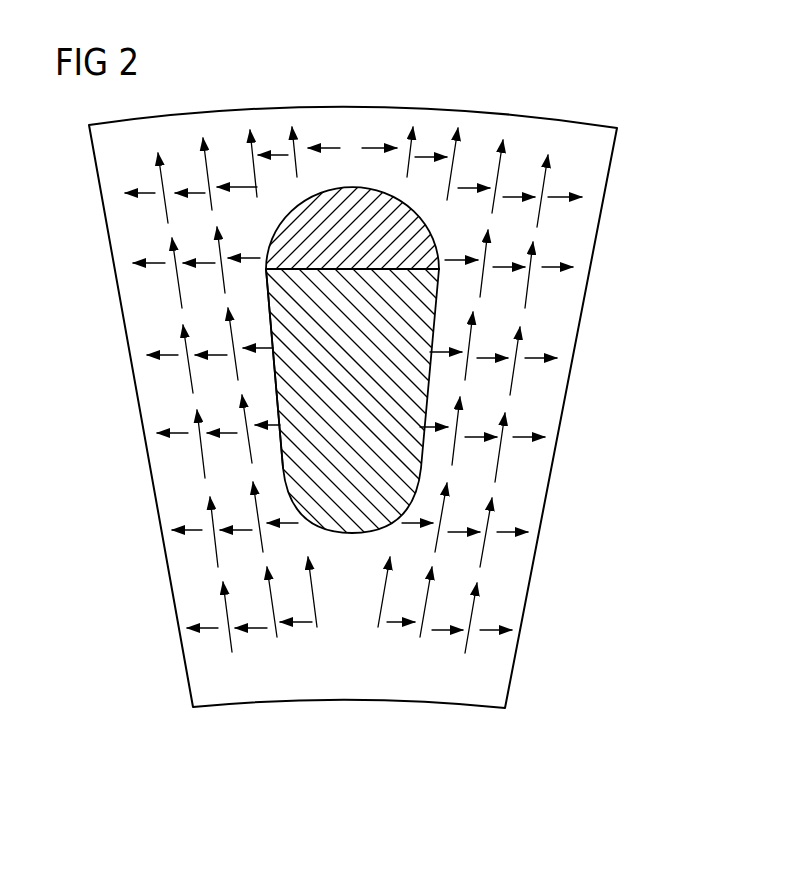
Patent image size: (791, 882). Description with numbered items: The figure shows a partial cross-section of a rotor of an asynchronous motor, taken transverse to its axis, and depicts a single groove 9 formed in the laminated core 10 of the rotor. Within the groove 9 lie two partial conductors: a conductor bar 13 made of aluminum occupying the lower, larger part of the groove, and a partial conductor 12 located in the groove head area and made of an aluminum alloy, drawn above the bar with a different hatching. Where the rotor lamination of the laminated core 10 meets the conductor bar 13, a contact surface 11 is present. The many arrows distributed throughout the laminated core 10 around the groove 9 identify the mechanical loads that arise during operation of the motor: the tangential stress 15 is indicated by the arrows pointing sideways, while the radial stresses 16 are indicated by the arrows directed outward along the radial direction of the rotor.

The groove 9 is at (430, 213).
The laminated core 10 is at (597, 157).
The contact surface 11 is at (428, 383).
The partial conductor 12 is at (349, 198).
The conductor bar 13 is at (265, 298).
The tangential stress 15 is at (392, 623).
The radial stress 16 is at (385, 607).